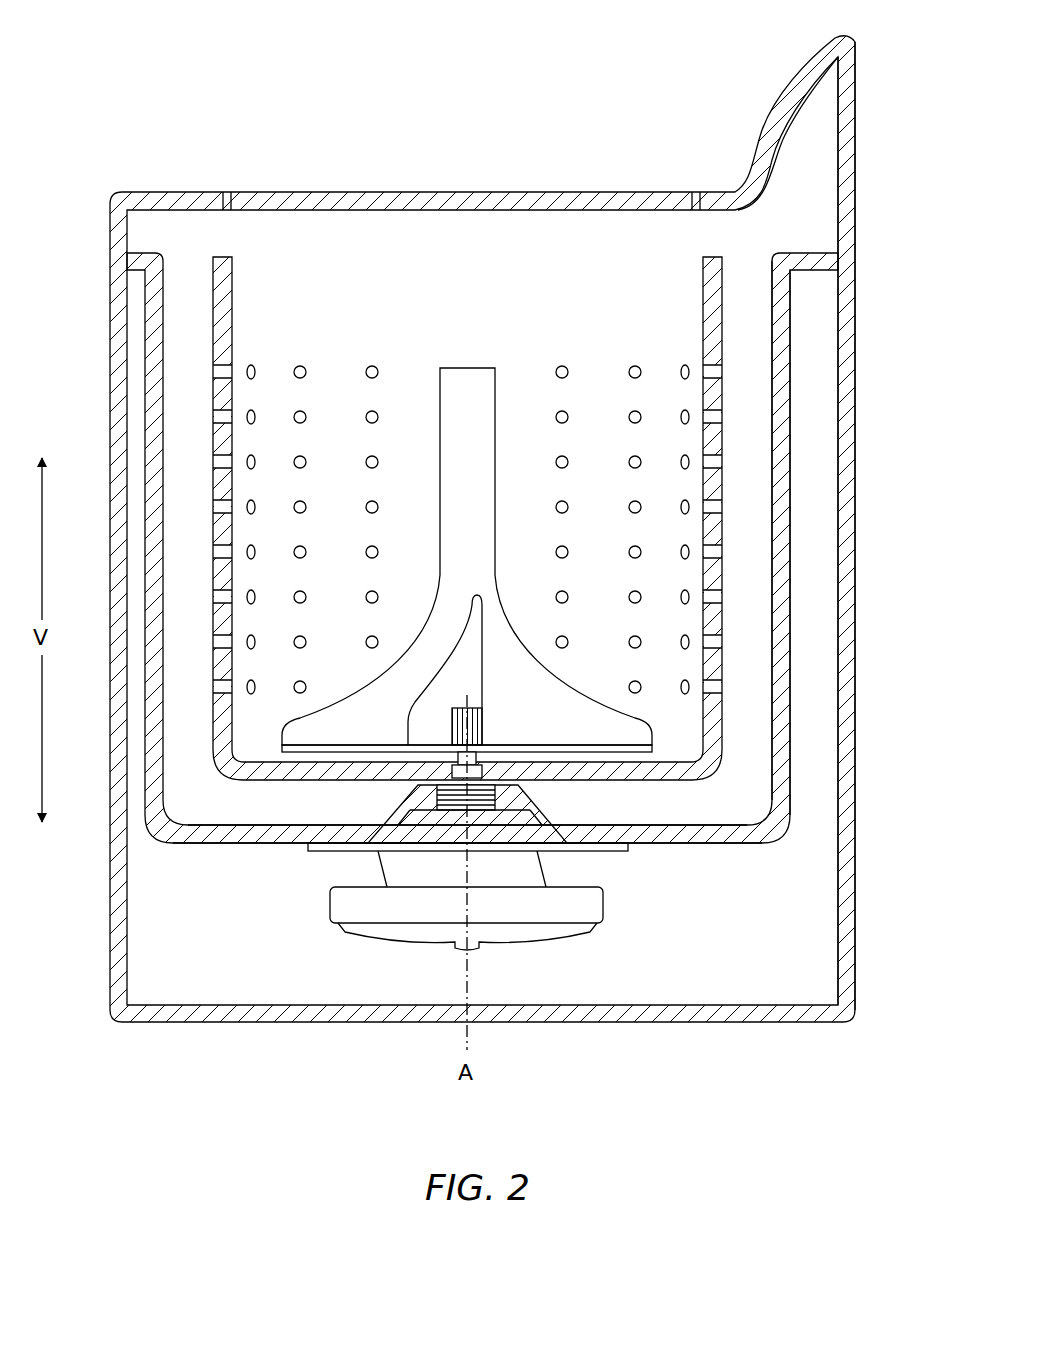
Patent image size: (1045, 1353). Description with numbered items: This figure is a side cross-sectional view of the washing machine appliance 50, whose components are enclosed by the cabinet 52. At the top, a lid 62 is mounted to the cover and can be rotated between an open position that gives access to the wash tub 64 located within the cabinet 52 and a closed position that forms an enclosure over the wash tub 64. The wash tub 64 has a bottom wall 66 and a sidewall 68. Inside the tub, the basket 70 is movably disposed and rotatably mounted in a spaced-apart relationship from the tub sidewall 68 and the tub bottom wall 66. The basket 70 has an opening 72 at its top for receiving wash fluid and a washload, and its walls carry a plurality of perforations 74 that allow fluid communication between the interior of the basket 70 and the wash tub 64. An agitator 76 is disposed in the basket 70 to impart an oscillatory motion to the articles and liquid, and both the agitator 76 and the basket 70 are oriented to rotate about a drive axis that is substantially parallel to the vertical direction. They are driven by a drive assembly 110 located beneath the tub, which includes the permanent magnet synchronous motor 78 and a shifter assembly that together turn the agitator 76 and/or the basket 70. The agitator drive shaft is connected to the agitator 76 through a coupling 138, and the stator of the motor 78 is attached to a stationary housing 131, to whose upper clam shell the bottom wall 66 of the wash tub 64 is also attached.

The washing machine appliance 50 is at (503, 529).
The cabinet 52 is at (850, 317).
The lid 62 is at (348, 197).
The wash tub 64 is at (536, 582).
The bottom wall 66 is at (730, 851).
The sidewall 68 is at (794, 472).
The basket 70 is at (450, 454).
The opening 72 is at (556, 262).
The perforations 74 is at (384, 362).
The agitator 76 is at (467, 532).
The permanent magnet synchronous motor 78 is at (600, 905).
The drive assembly 110 is at (429, 872).
The stationary housing 131 is at (540, 852).
The coupling 138 is at (472, 722).